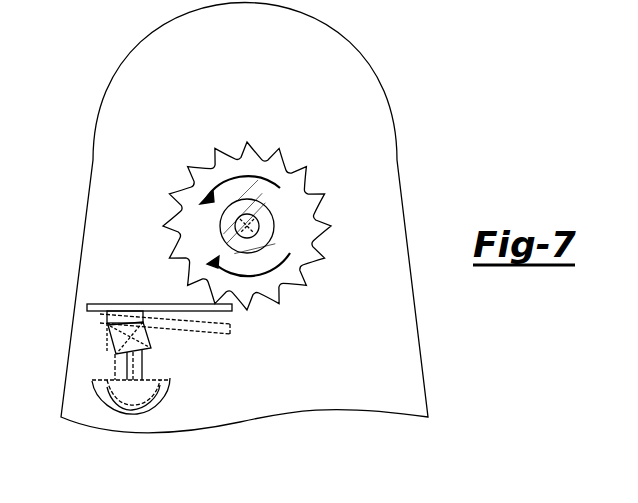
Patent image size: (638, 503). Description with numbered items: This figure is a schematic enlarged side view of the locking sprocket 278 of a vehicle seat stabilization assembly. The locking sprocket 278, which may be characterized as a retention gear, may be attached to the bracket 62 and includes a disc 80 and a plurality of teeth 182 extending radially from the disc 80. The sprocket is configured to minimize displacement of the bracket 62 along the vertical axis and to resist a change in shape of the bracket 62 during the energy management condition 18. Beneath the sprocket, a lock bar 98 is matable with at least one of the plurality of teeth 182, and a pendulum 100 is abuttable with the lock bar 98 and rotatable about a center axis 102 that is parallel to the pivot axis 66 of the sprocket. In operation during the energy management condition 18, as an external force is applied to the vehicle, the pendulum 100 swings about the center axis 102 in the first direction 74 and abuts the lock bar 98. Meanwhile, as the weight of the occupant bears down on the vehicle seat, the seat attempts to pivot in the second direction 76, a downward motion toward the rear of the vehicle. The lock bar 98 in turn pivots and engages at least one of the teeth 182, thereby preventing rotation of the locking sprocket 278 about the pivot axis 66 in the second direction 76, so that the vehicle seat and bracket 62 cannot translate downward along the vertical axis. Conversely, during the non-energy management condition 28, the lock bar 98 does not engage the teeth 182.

The bracket 62 is at (347, 60).
The first direction 74 is at (258, 177).
The teeth 182 is at (293, 163).
The disc 80 is at (297, 228).
The second direction 76 is at (262, 262).
The pivot axis 66 is at (249, 236).
The locking sprocket 278 is at (333, 304).
The lock bar 98 is at (124, 304).
The center axis 102 is at (110, 345).
The pendulum 100 is at (149, 368).
The energy management condition 18 is at (172, 395).
The non-energy management condition 28 is at (99, 401).